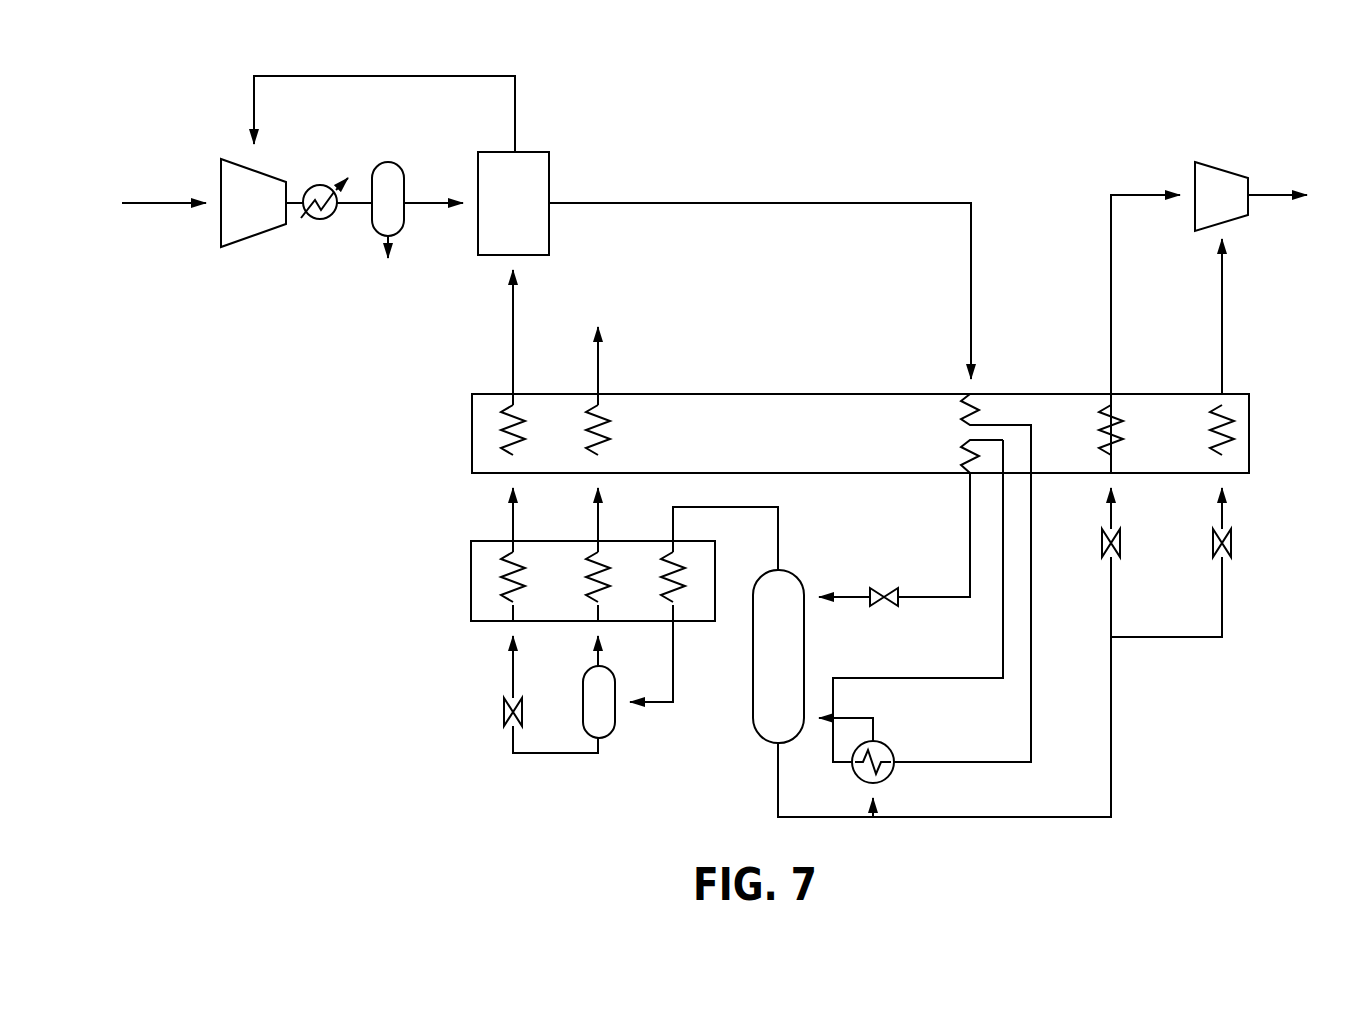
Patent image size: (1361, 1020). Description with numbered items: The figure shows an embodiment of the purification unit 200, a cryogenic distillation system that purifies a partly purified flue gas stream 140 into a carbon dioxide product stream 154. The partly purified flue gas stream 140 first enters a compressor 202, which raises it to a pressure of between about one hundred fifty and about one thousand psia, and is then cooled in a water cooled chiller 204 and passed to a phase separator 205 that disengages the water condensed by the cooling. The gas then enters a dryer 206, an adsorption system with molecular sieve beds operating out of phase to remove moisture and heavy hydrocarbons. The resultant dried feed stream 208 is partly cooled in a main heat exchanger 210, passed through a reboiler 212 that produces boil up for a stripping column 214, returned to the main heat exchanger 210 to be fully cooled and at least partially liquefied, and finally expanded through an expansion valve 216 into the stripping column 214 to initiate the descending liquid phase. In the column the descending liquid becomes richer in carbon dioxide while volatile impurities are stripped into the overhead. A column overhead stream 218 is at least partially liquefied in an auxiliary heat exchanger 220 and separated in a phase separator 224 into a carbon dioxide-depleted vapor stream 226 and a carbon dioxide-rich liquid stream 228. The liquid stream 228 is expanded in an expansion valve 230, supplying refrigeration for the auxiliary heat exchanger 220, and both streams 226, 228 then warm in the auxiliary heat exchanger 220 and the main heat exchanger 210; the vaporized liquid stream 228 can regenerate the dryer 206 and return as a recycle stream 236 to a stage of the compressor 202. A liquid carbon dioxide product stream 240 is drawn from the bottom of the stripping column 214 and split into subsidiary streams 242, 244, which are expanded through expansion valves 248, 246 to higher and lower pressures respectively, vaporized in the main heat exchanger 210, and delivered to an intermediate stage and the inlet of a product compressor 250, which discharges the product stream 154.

The partly purified flue gas stream 140 is at (170, 200).
The product stream 154 is at (1272, 195).
The purification unit 200 is at (1036, 122).
The compressor 202 is at (236, 248).
The water cooled chiller 204 is at (321, 185).
The phase separator 205 is at (389, 162).
The dryer 206 is at (538, 152).
The dried feed stream 208 is at (752, 203).
The main heat exchanger 210 is at (756, 394).
The reboiler 212 is at (885, 745).
The stripping column 214 is at (757, 735).
The expansion valve 216 is at (880, 585).
The column overhead stream 218 is at (778, 522).
The auxiliary heat exchanger 220 is at (485, 541).
The phase separator 224 is at (610, 738).
The carbon dioxide-depleted vapor stream 226 is at (598, 652).
The carbon dioxide-rich liquid stream 228 is at (555, 753).
The expansion valve 230 is at (504, 720).
The recycle stream 236 is at (405, 76).
The carbon dioxide product stream 240 is at (940, 817).
The subsidiary stream 242 is at (1112, 606).
The subsidiary stream 244 is at (1222, 610).
The expansion valve 246 is at (1230, 552).
The expansion valve 248 is at (1118, 555).
The product compressor 250 is at (1218, 162).